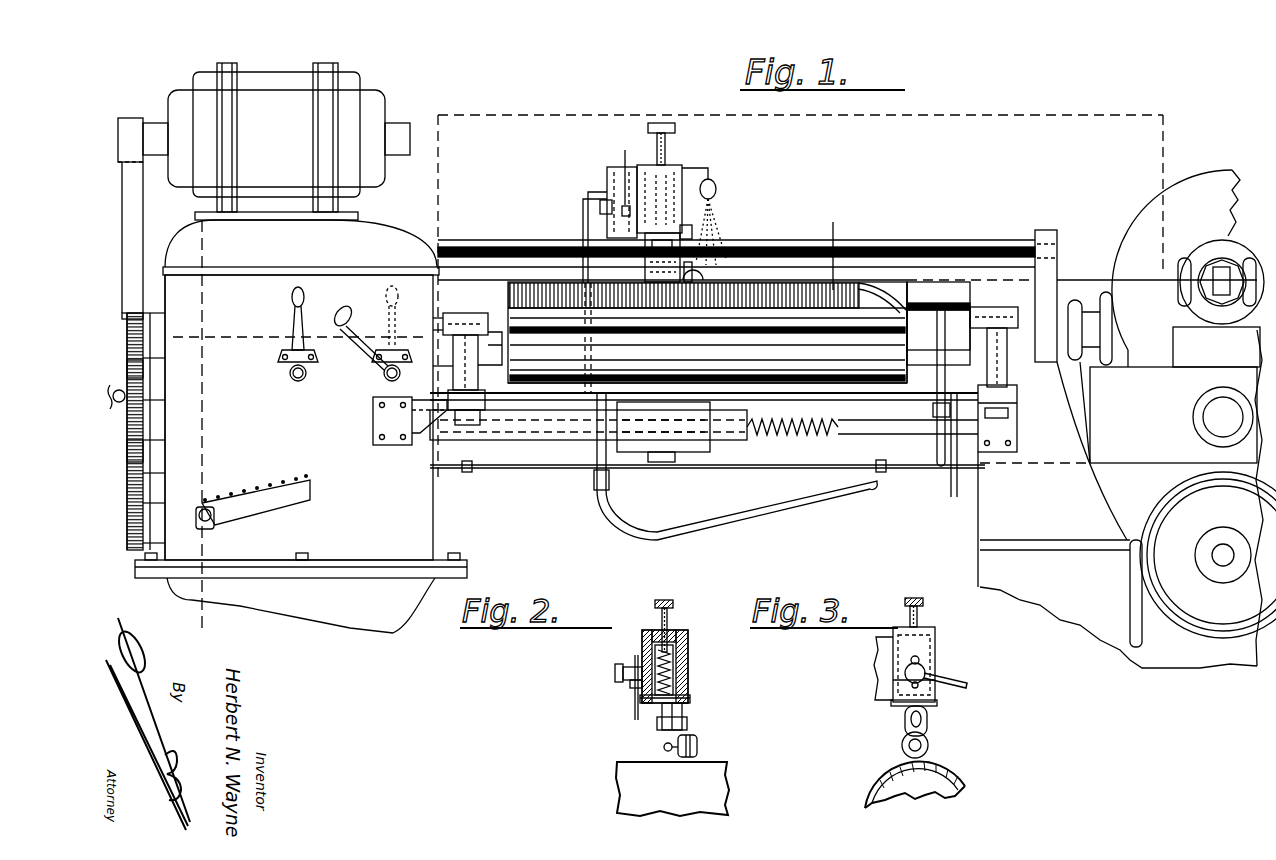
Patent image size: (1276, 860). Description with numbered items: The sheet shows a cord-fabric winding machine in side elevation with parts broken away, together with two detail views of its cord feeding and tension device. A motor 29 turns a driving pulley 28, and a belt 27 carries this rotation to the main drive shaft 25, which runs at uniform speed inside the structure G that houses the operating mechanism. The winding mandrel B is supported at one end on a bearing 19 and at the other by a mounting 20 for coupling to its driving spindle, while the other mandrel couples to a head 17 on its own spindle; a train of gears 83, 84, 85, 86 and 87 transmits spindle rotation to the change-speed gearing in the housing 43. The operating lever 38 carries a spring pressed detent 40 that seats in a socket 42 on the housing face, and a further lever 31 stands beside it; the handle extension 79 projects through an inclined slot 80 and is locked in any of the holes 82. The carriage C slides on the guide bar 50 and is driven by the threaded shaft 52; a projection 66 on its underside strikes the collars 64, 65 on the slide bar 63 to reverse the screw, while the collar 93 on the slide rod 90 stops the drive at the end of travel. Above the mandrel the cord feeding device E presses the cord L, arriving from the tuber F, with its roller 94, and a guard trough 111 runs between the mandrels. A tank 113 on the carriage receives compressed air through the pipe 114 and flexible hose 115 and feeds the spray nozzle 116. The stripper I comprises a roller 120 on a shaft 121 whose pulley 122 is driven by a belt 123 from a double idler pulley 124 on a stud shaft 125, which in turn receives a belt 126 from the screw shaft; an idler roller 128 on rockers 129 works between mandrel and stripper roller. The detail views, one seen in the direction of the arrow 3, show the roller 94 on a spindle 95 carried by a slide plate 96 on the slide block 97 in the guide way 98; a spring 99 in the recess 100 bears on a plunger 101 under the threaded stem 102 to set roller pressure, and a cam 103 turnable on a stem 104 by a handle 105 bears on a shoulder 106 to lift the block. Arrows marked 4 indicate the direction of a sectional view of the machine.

In FIG. 1, the motor 29 is at (166, 91).
In FIG. 1, the driving pulley 28 is at (118, 120).
In FIG. 1, the belt 27 is at (122, 188).
In FIG. 1, the head 17 is at (200, 211).
In FIG. 1, the structure G is at (405, 221).
In FIG. 1, the housing 43 is at (436, 517).
In FIG. 1, the gear 83 is at (127, 548).
In FIG. 1, the gear 84 is at (127, 498).
In FIG. 1, the gear 85 is at (127, 452).
In FIG. 1, the gear 86 is at (127, 370).
In FIG. 1, the gear 87 is at (128, 314).
In FIG. 1, the main drive shaft 25 is at (117, 404).
In FIG. 1, the hand wheel 4 is at (115, 348).
In FIG. 1, the control lever 31 is at (292, 324).
In FIG. 1, the operating lever 38 is at (346, 313).
In FIG. 1, the spring pressed detent 40 is at (378, 365).
In FIG. 1, the socket 42 is at (398, 345).
In FIG. 1, the mounting 20 is at (505, 343).
In FIG. 1, the rockers 129 is at (468, 313).
In FIG. 1, the inclined slot 80 is at (310, 496).
In FIG. 1, the handle extension 79 is at (214, 530).
In FIG. 1, the holes 82 is at (280, 482).
In FIG. 1, the guard trough 111 is at (928, 268).
In FIG. 1, the stripper I is at (829, 246).
In FIG. 1, the winding mandrel B is at (882, 292).
In FIG. 2, the winding mandrel B is at (622, 773).
In FIG. 3, the winding mandrel B is at (870, 790).
In FIG. 1, the roller 120 is at (707, 322).
In FIG. 1, the idler roller 128 is at (748, 340).
In FIG. 1, the slide rod 90 is at (782, 383).
In FIG. 1, the collar 93 is at (880, 347).
In FIG. 1, the bearing 19 is at (906, 336).
In FIG. 1, the carriage C is at (695, 150).
In FIG. 3, the carriage C is at (876, 665).
In FIG. 1, the threaded stem 102 is at (655, 141).
In FIG. 2, the threaded stem 102 is at (668, 632).
In FIG. 3, the threaded stem 102 is at (920, 622).
In FIG. 1, the liquid containing tank 113 is at (602, 176).
In FIG. 1, the pipe 114 is at (583, 200).
In FIG. 1, the cam 103 is at (625, 210).
In FIG. 2, the cam 103 is at (623, 672).
In FIG. 3, the cam 103 is at (924, 672).
In FIG. 1, the handle 105 is at (645, 228).
In FIG. 2, the handle 105 is at (635, 716).
In FIG. 3, the handle 105 is at (968, 685).
In FIG. 1, the spray nozzle 116 is at (710, 177).
In FIG. 1, the cord feeding device E is at (708, 228).
In FIG. 1, the feeding and presser roller 94 is at (702, 266).
In FIG. 2, the feeding and presser roller 94 is at (700, 746).
In FIG. 3, the feeding and presser roller 94 is at (930, 745).
In FIG. 1, the collar 65 is at (548, 470).
In FIG. 1, the projection 66 is at (670, 463).
In FIG. 1, the threaded shaft 52 is at (782, 432).
In FIG. 1, the guide bar 50 is at (848, 436).
In FIG. 1, the collar 64 is at (467, 472).
In FIG. 1, the slide bar 63 is at (886, 470).
In FIG. 1, the flexible hose 115 is at (786, 512).
In FIG. 1, the belt 123 is at (940, 320).
In FIG. 1, the pulley 122 is at (955, 330).
In FIG. 1, the double idler pulley 124 is at (936, 443).
In FIG. 1, the stud shaft 125 is at (952, 470).
In FIG. 1, the shaft 121 is at (975, 362).
In FIG. 1, the belt 126 is at (958, 400).
In FIG. 1, the tuber F is at (1207, 228).
In FIG. 1, the cord L is at (1076, 280).
In FIG. 2, the section line 3 is at (618, 645).
In FIG. 2, the plunger 101 is at (688, 648).
In FIG. 2, the spring 99 is at (684, 662).
In FIG. 2, the guide way 98 is at (690, 672).
In FIG. 3, the guide way 98 is at (935, 642).
In FIG. 2, the slide block 97 is at (690, 688).
In FIG. 3, the slide block 97 is at (892, 703).
In FIG. 2, the recess 100 is at (690, 699).
In FIG. 2, the slide plate 96 is at (684, 722).
In FIG. 3, the slide plate 96 is at (905, 734).
In FIG. 2, the spindle 95 is at (664, 748).
In FIG. 3, the spindle 95 is at (904, 746).
In FIG. 2, the stem 104 is at (619, 680).
In FIG. 3, the stem 104 is at (918, 664).
In FIG. 2, the shoulder 106 is at (632, 688).
In FIG. 3, the shoulder 106 is at (925, 686).